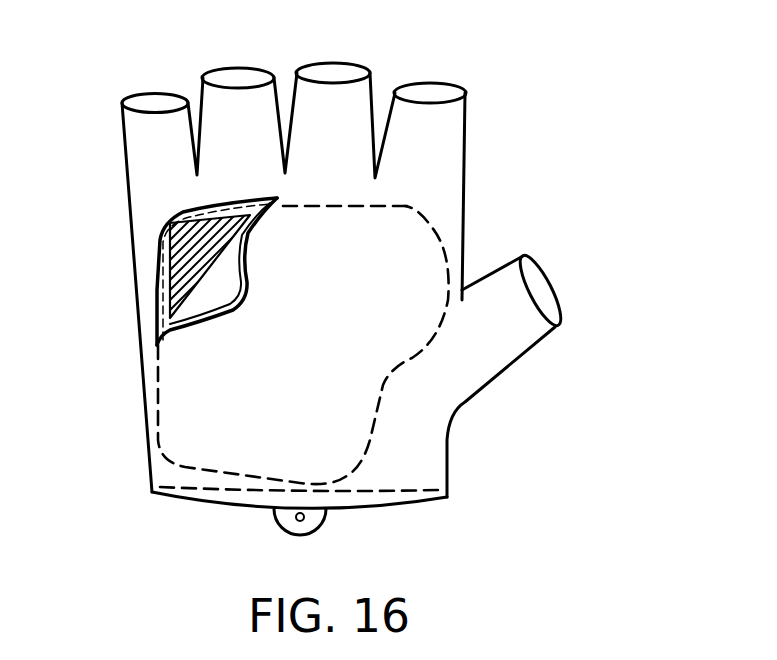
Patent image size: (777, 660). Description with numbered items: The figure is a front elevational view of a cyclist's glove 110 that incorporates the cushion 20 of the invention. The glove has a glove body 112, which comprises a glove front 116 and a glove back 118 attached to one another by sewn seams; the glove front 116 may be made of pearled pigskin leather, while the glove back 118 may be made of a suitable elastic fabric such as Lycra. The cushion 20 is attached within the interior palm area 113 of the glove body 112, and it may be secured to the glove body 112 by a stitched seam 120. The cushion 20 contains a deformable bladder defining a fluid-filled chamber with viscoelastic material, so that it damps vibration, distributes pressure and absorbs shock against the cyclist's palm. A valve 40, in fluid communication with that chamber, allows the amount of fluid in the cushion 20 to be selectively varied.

The cyclist's glove 110 is at (562, 79).
The glove body 112 is at (448, 448).
The interior palm area 113 is at (317, 378).
The glove front 116 is at (508, 336).
The glove back 118 is at (550, 275).
The stitched seam 120 is at (303, 212).
The cushion 20 is at (163, 226).
The valve 40 is at (300, 521).